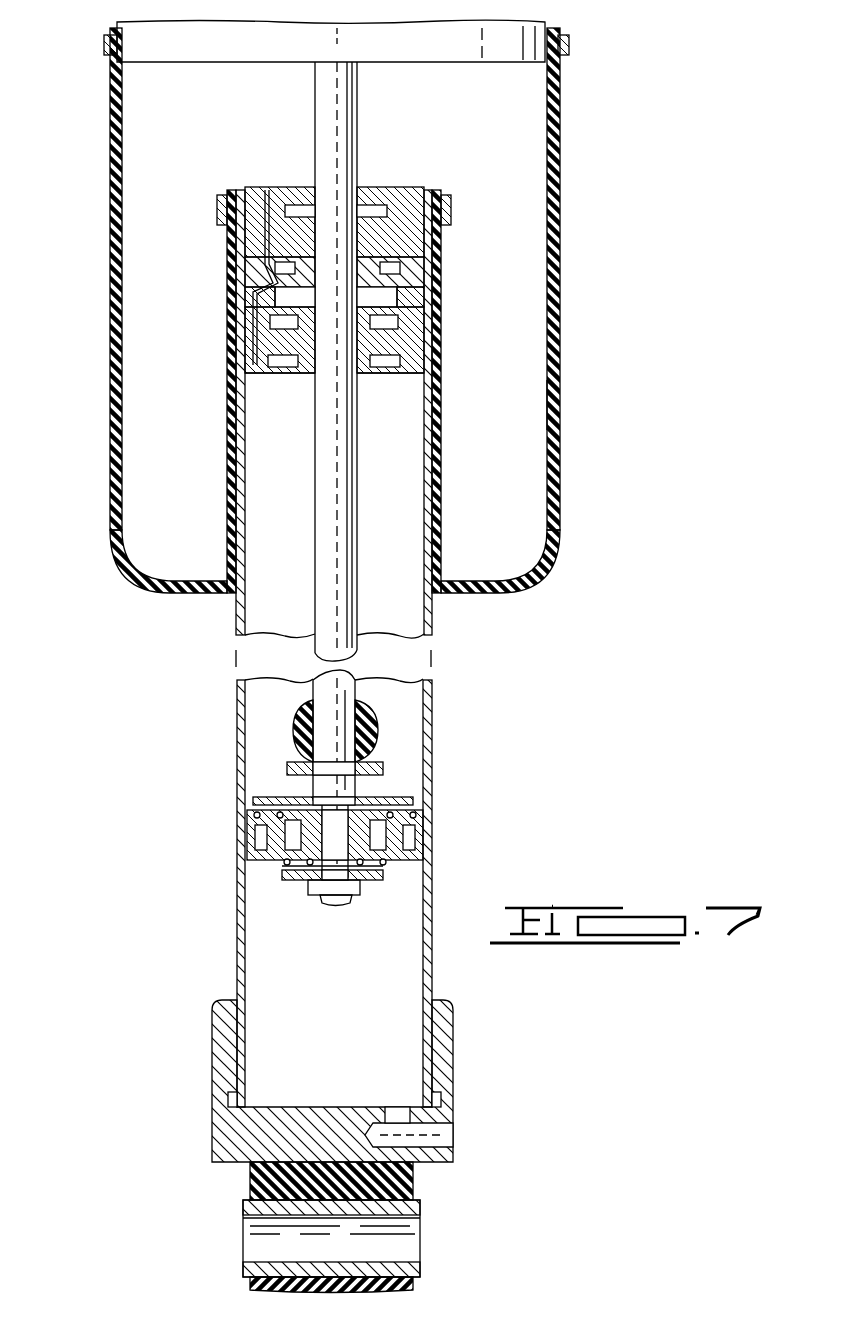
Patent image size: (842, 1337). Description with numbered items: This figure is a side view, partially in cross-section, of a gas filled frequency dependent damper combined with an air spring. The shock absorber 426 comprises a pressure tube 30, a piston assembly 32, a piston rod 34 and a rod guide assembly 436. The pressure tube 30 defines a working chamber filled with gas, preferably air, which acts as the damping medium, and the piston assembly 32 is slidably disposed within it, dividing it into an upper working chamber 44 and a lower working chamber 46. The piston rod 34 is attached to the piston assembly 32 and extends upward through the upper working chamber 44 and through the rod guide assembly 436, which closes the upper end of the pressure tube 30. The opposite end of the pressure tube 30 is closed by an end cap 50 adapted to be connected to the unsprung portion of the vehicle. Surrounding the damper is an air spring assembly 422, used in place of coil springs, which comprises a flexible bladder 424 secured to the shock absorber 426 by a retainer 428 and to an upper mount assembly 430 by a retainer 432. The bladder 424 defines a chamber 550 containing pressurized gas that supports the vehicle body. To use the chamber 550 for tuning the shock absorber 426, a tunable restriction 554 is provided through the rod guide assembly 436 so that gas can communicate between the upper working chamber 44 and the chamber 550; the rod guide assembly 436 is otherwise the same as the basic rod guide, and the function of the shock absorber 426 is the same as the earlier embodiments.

The air spring assembly 422 is at (92, 158).
The gas chamber 550 is at (258, 128).
The piston rod 34 is at (345, 103).
The upper mount assembly 430 is at (470, 47).
The retainer 432 is at (569, 43).
The retainer 428 is at (453, 203).
The tunable restriction 554 is at (264, 241).
The rod guide assembly 436 is at (412, 300).
The flexible bladder 424 is at (559, 405).
The upper working chamber 44 is at (300, 428).
The shock absorber 426 is at (446, 948).
The pressure tube 30 is at (432, 752).
The piston assembly 32 is at (430, 828).
The lower working chamber 46 is at (355, 984).
The end cap 50 is at (445, 1115).